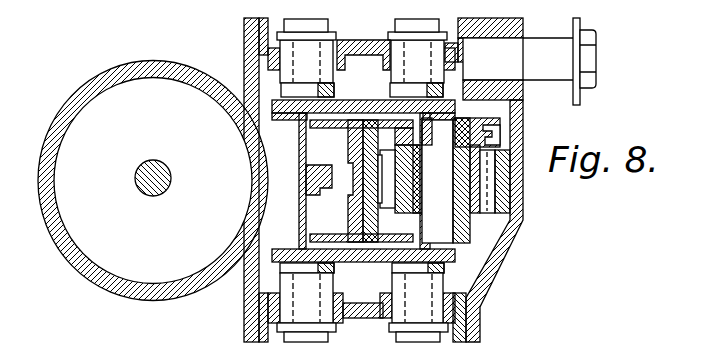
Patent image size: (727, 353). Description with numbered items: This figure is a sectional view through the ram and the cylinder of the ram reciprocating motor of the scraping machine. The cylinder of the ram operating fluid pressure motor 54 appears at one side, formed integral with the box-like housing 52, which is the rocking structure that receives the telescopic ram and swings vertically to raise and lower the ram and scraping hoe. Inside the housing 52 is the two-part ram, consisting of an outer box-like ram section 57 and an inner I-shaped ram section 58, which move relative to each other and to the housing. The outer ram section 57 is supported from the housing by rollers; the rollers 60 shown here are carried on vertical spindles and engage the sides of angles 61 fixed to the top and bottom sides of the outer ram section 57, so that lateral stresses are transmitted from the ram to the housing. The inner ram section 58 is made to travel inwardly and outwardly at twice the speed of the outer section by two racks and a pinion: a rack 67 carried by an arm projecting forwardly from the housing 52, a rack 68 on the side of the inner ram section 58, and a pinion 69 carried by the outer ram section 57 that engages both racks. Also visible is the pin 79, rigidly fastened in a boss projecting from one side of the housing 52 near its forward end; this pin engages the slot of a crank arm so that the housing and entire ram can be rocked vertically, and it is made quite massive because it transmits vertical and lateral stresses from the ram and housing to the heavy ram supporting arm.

The housing 52 is at (500, 296).
The ram operating fluid pressure motor 54 is at (80, 268).
The outer box-like ram section 57 is at (299, 213).
The inner I-shaped ram section 58 is at (349, 152).
The rollers 60 is at (268, 95).
The angles 61 is at (378, 97).
The rack 67 is at (505, 206).
The rack 68 is at (375, 185).
The pinion 69 is at (470, 210).
The pin 79 is at (560, 78).